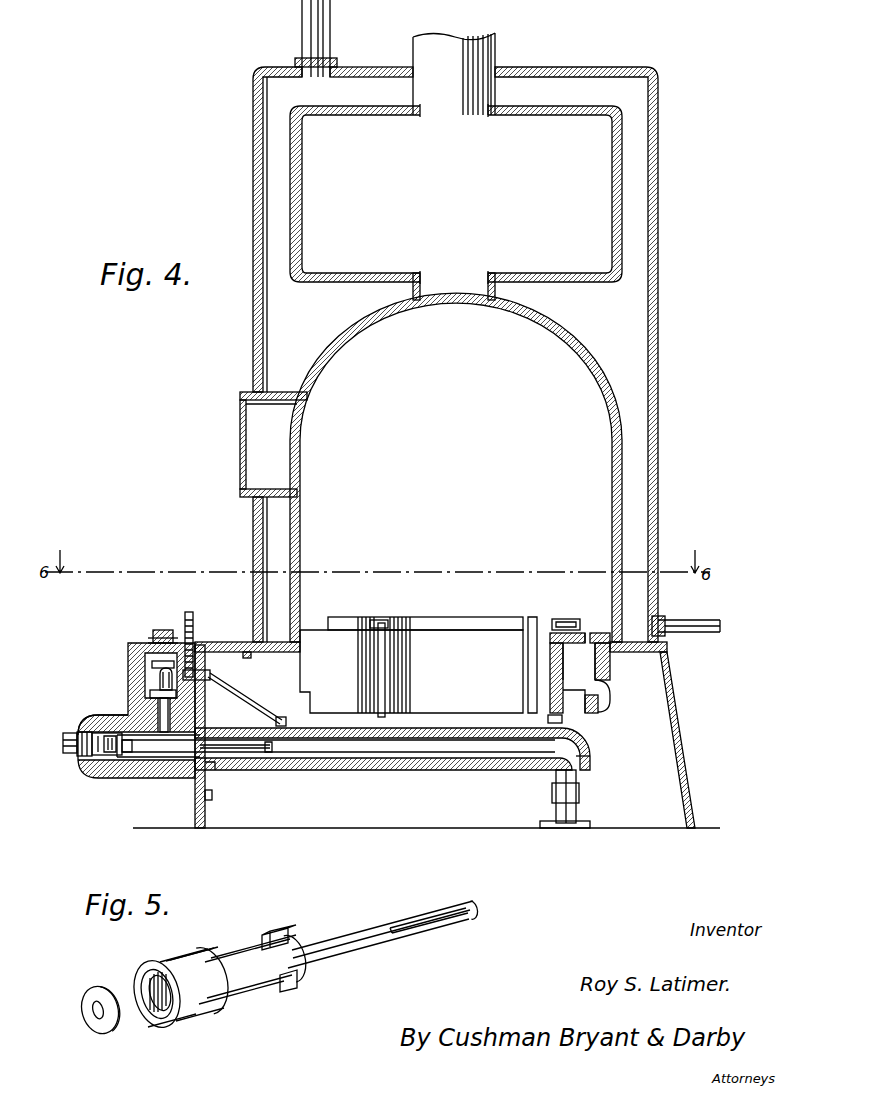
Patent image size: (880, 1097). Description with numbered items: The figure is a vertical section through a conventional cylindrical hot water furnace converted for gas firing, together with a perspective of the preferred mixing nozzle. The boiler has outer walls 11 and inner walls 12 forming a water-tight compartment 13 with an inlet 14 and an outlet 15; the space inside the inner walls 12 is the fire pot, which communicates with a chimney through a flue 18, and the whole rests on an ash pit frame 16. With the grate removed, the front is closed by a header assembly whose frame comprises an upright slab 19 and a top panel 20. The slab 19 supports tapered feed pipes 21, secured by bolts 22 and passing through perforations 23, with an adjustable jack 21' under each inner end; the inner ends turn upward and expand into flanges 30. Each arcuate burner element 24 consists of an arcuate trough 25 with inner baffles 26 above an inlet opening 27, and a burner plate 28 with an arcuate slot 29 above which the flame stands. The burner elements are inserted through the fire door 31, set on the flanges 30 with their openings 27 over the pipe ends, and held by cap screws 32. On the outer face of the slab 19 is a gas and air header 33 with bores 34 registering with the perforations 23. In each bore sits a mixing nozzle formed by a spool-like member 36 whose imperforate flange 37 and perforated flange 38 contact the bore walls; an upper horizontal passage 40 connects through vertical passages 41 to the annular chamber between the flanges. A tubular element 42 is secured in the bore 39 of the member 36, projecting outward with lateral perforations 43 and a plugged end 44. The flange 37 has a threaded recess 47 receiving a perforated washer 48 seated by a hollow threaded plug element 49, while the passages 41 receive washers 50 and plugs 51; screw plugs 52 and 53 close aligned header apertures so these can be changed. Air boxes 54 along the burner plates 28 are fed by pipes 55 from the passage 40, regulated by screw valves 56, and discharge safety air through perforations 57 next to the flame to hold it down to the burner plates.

In FIG. 4, the outer walls 11 is at (660, 398).
In FIG. 4, the inner walls 12 is at (300, 195).
In FIG. 4, the water-tight compartment 13 is at (305, 378).
In FIG. 4, the inlet 14 is at (721, 625).
In FIG. 4, the outlet 15 is at (328, 27).
In FIG. 4, the ash pit frame 16 is at (690, 765).
In FIG. 4, the flue 18 is at (487, 57).
In FIG. 4, the upright slab 19 is at (195, 800).
In FIG. 4, the top panel 20 is at (236, 642).
In FIG. 4, the feed pipes 21 is at (392, 760).
In FIG. 4, the adjustable jack 21' is at (600, 773).
In FIG. 4, the bolts 22 is at (212, 795).
In FIG. 4, the perforations 23 is at (216, 766).
In FIG. 4, the arcuate elements 24 is at (607, 665).
In FIG. 4, the arcuate trough 25 is at (606, 688).
In FIG. 4, the inner baffles 26 is at (570, 680).
In FIG. 4, the inlet opening 27 is at (586, 707).
In FIG. 4, the burner plate 28 is at (608, 637).
In FIG. 4, the arcuate slot 29 is at (586, 636).
In FIG. 4, the flanges 30 is at (558, 722).
In FIG. 4, the fire door 31 is at (240, 470).
In FIG. 4, the cap screws 32 is at (555, 786).
In FIG. 4, the gas and air header 33 is at (96, 716).
In FIG. 4, the bores 34 is at (100, 763).
In FIG. 4, the spool-like member 36 is at (165, 758).
In FIG. 5, the spool-like member 36 is at (254, 988).
In FIG. 5, the flange 37 is at (158, 961).
In FIG. 5, the flange 38 is at (276, 932).
In FIG. 4, the bore 39 is at (150, 760).
In FIG. 5, the bore 39 is at (152, 986).
In FIG. 4, the horizontal passage 40 is at (138, 665).
In FIG. 4, the vertical passages 41 is at (160, 725).
In FIG. 5, the tubular element 42 is at (352, 954).
In FIG. 5, the lateral perforations 43 is at (404, 929).
In FIG. 4, the plug 44 is at (266, 742).
In FIG. 5, the threaded recess 47 is at (160, 1020).
In FIG. 5, the perforated disc or washer 48 is at (102, 1030).
In FIG. 4, the hollow threaded plug element 49 is at (110, 760).
In FIG. 4, the washers 50 is at (150, 693).
In FIG. 4, the plugs 51 is at (158, 664).
In FIG. 4, the screw plug 52 is at (64, 745).
In FIG. 4, the screw plug 53 is at (161, 630).
In FIG. 4, the air boxes 54 is at (416, 617).
In FIG. 4, the pipes 55 is at (258, 702).
In FIG. 4, the screw valves 56 is at (193, 612).
In FIG. 4, the perforations 57 is at (573, 619).